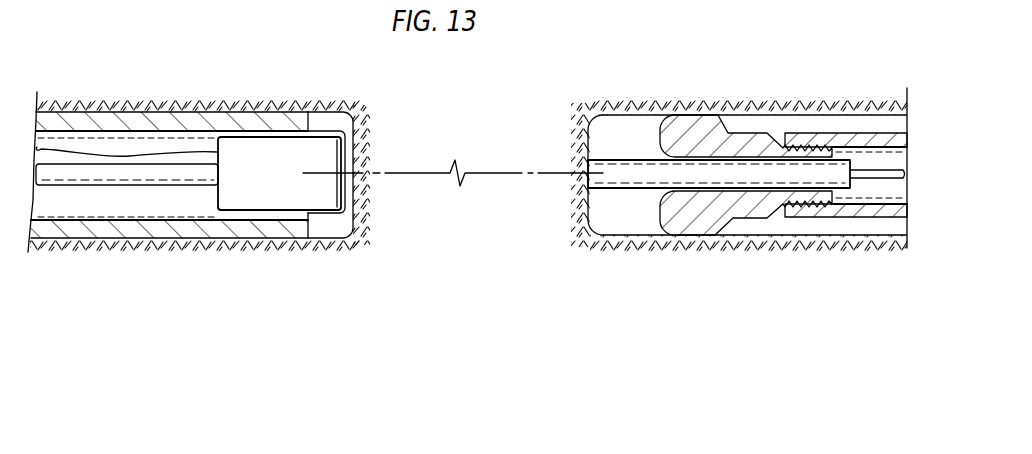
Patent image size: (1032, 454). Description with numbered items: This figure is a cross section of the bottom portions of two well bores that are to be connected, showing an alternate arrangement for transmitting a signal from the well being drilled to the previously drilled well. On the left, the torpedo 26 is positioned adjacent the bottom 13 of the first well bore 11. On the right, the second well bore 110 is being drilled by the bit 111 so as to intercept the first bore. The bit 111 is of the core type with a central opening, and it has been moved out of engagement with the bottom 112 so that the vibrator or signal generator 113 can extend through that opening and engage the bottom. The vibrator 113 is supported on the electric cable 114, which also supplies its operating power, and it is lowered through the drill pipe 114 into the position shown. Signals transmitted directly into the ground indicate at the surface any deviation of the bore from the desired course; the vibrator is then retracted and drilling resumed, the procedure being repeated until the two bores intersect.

The first well bore 11 is at (113, 208).
The bottom 13 is at (355, 212).
The torpedo 26 is at (293, 196).
The second well bore 110 is at (632, 217).
The bit 111 is at (700, 217).
The bottom 112 is at (586, 222).
The vibrator or signal generator 113 is at (615, 162).
The electric cable 114 is at (853, 217).